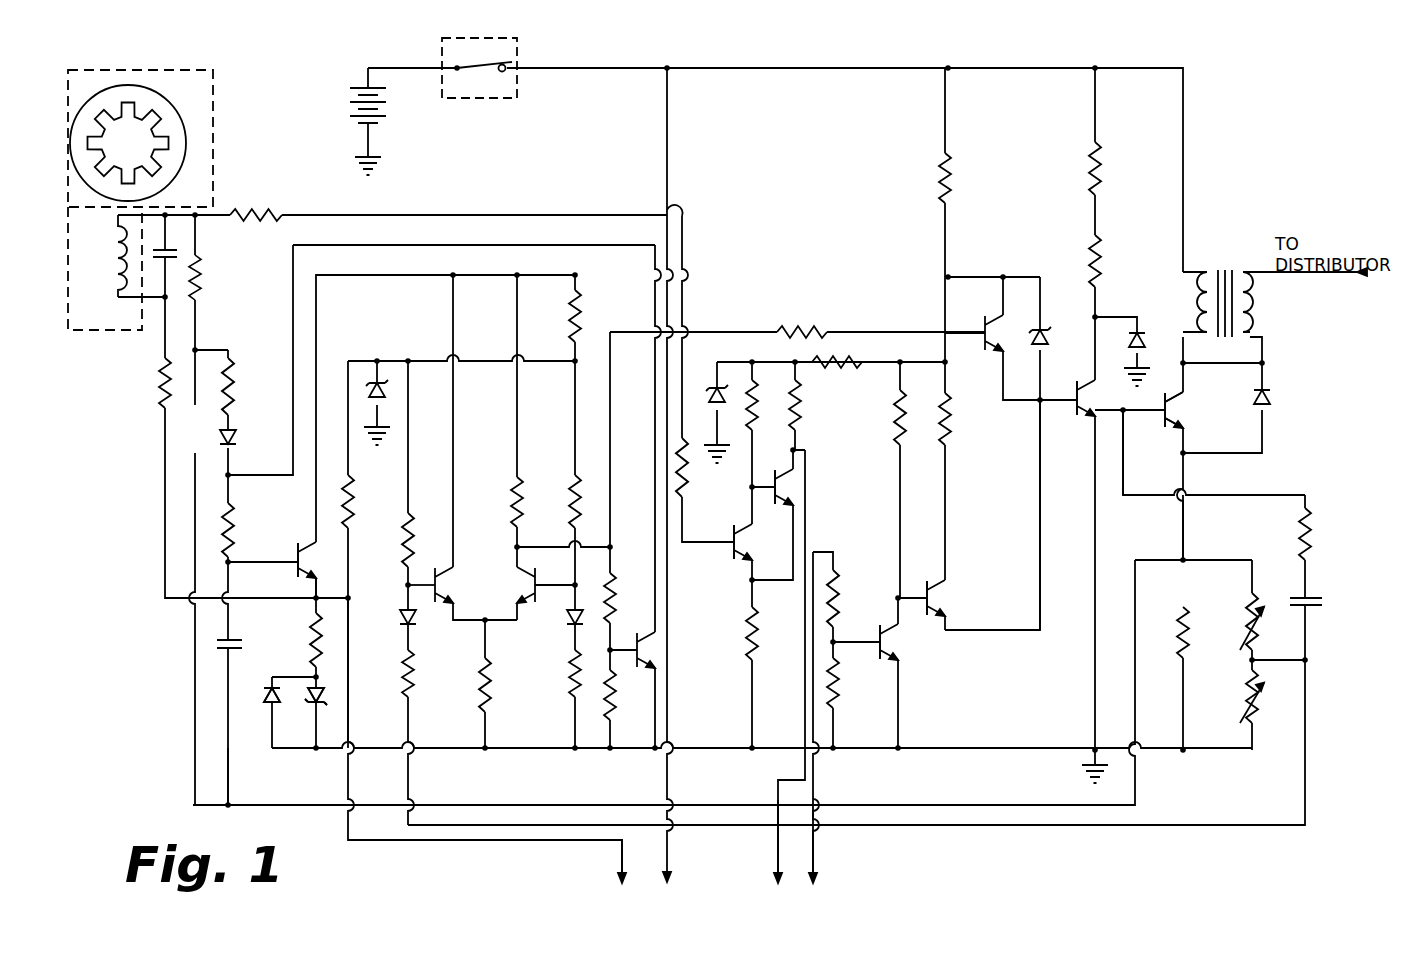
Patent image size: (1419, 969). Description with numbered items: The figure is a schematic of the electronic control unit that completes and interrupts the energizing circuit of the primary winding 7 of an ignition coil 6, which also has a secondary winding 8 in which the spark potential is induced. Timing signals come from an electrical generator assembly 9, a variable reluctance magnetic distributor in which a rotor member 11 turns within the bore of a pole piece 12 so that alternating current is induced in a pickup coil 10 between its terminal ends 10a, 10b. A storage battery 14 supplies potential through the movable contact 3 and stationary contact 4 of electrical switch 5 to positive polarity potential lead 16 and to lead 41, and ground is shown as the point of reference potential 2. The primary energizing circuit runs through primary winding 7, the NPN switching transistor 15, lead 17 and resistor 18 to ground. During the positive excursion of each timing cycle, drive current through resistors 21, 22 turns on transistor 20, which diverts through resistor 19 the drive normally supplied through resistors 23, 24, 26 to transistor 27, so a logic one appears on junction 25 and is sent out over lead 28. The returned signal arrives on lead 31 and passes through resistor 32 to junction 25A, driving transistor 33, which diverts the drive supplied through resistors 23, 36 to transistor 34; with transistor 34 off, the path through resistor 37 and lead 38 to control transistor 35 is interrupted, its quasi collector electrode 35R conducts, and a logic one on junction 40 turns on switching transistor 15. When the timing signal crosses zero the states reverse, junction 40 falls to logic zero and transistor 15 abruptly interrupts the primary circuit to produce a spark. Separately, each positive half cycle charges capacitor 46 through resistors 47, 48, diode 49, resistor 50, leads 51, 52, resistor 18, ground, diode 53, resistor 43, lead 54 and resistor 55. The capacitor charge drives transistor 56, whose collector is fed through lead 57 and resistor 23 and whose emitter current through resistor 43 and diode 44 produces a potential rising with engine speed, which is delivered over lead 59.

The point of reference or ground potential 2 is at (372, 157).
The movable contact 3 is at (474, 62).
The stationary contact 4 is at (501, 73).
The electrical switch 5 is at (517, 88).
The ignition coil 6 is at (1226, 266).
The primary winding 7 is at (1198, 298).
The secondary winding 8 is at (1255, 296).
The electrical generator assembly 9 is at (214, 116).
The pickup coil 10 is at (108, 252).
The terminal end 10a is at (117, 214).
The terminal end 10b is at (118, 298).
The rotor member 11 is at (140, 133).
The pole piece 12 is at (172, 151).
The storage battery 14 is at (378, 87).
The NPN switching transistor 15 is at (1160, 440).
The positive polarity potential lead 16 is at (810, 68).
The lead 17 is at (1185, 535).
The resistor 18 is at (1190, 622).
The resistor 19 is at (750, 635).
The NPN transistor 20 is at (728, 548).
The resistor 21 is at (265, 211).
The resistor 22 is at (682, 505).
The resistor 23 is at (950, 178).
The resistor 24 is at (828, 368).
The junction 25 is at (312, 594).
The junction 25A is at (836, 645).
The resistor 26 is at (756, 412).
The NPN transistor 27 is at (772, 492).
The lead 28 is at (806, 537).
The lead 31 is at (814, 772).
The resistor 32 is at (838, 590).
The NPN transistor 33 is at (886, 650).
The NPN transistor 34 is at (932, 594).
The control transistor 35 is at (1080, 410).
The power transistor 35R is at (1140, 382).
The resistor 36 is at (897, 420).
The resistor 37 is at (950, 430).
The lead 38 is at (1038, 525).
The junction 40 is at (1125, 415).
The positive polarity potential lead 41 is at (667, 165).
The resistor 43 is at (311, 632).
The diode 44 is at (308, 702).
The capacitor 46 is at (242, 645).
The resistor 47 is at (198, 280).
The resistor 48 is at (233, 375).
The diode 49 is at (236, 436).
The resistor 50 is at (236, 522).
The lead 51 is at (230, 785).
The lead 52 is at (297, 802).
The diode 53 is at (268, 712).
The lead 54 is at (178, 600).
The resistor 55 is at (160, 382).
The NPN transistor 56 is at (294, 552).
The lead 57 is at (318, 315).
The lead 59 is at (350, 660).